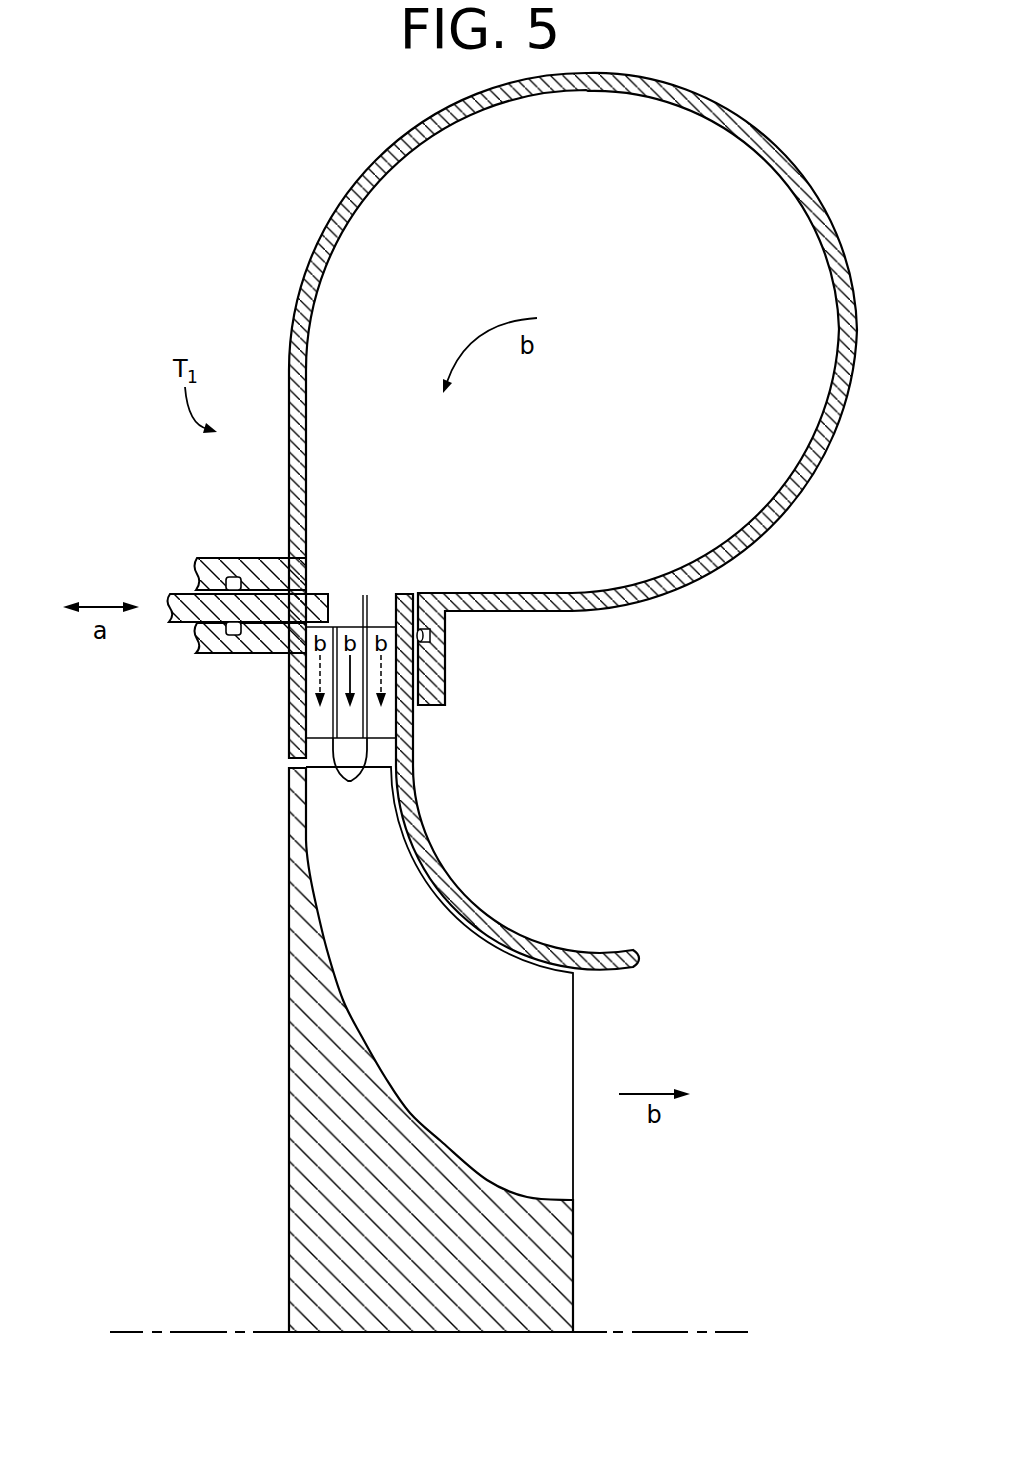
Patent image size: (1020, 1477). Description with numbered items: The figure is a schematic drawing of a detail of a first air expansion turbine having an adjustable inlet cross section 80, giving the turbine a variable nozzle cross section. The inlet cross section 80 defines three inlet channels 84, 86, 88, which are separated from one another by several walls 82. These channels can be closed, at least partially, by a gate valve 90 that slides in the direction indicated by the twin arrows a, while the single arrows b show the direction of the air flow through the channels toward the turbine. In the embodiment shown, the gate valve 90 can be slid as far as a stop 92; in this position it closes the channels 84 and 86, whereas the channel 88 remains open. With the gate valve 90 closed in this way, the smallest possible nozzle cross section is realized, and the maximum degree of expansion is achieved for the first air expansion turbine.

The adjustable inlet cross section 80 is at (345, 616).
The walls 82 is at (349, 775).
The inlet channel 84 is at (315, 718).
The inlet channel 86 is at (355, 717).
The inlet channel 88 is at (380, 731).
The gate valve 90 is at (172, 592).
The stop 92 is at (368, 604).